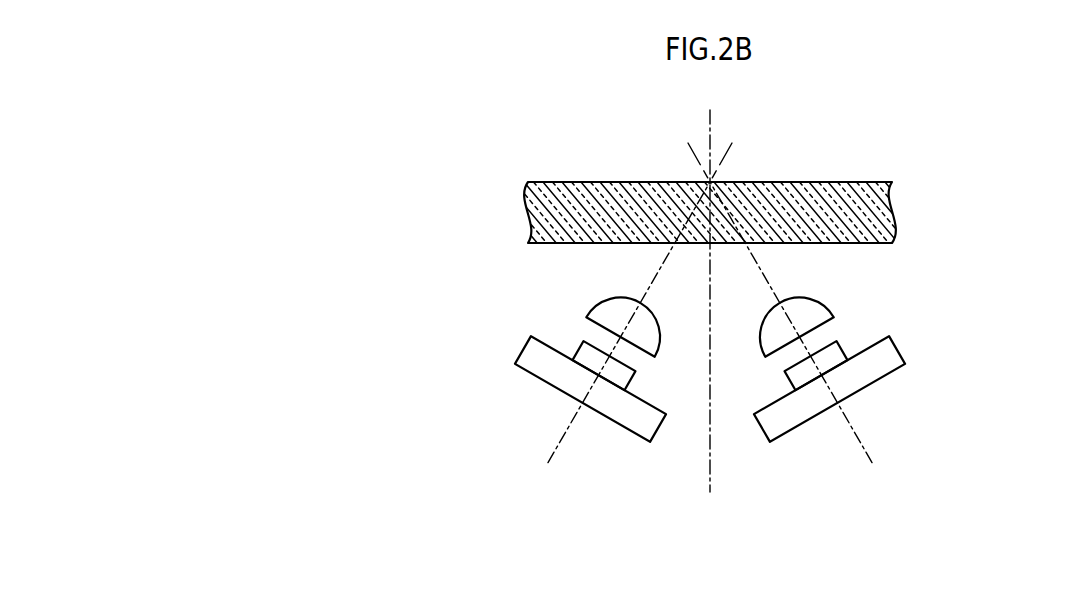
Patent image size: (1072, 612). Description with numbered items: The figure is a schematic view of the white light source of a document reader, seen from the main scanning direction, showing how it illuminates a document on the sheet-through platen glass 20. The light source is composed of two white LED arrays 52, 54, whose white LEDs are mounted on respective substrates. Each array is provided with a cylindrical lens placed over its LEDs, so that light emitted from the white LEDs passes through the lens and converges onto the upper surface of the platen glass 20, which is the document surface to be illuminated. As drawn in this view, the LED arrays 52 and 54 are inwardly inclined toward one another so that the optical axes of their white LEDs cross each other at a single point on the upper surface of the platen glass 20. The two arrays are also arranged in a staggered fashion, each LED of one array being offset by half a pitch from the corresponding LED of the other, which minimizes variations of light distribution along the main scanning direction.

The sheet-through platen glass 20 is at (867, 181).
The LED array 52 is at (621, 322).
The LED array 54 is at (802, 322).